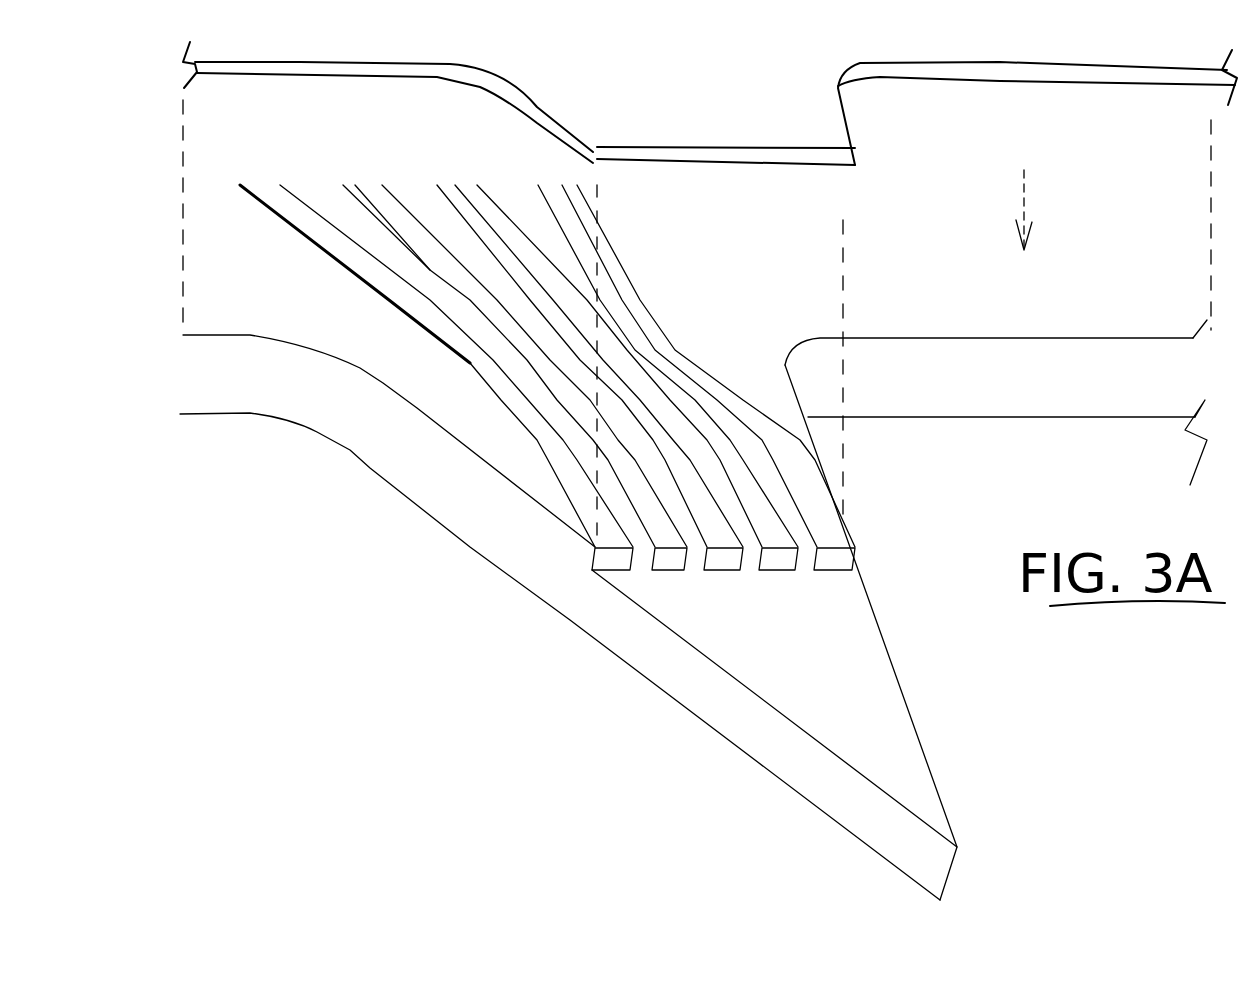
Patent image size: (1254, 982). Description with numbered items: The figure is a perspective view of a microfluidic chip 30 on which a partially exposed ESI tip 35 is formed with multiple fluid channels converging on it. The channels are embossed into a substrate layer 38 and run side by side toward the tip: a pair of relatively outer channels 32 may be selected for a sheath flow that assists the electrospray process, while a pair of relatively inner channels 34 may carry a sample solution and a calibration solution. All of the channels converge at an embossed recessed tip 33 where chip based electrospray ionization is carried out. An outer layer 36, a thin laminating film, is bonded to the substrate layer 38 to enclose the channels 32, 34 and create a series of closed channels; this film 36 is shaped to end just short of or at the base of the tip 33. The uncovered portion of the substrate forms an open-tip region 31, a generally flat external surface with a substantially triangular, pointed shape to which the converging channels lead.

The microfluidic chip 30 is at (992, 445).
The open-tip region 31 is at (827, 672).
The outer channels 32 is at (807, 572).
The embossed recessed tip 33 is at (932, 717).
The inner channels 34 is at (665, 508).
The ESI tip 35 is at (520, 545).
The outer layer 36 is at (645, 109).
The substrate layer 38 is at (975, 294).